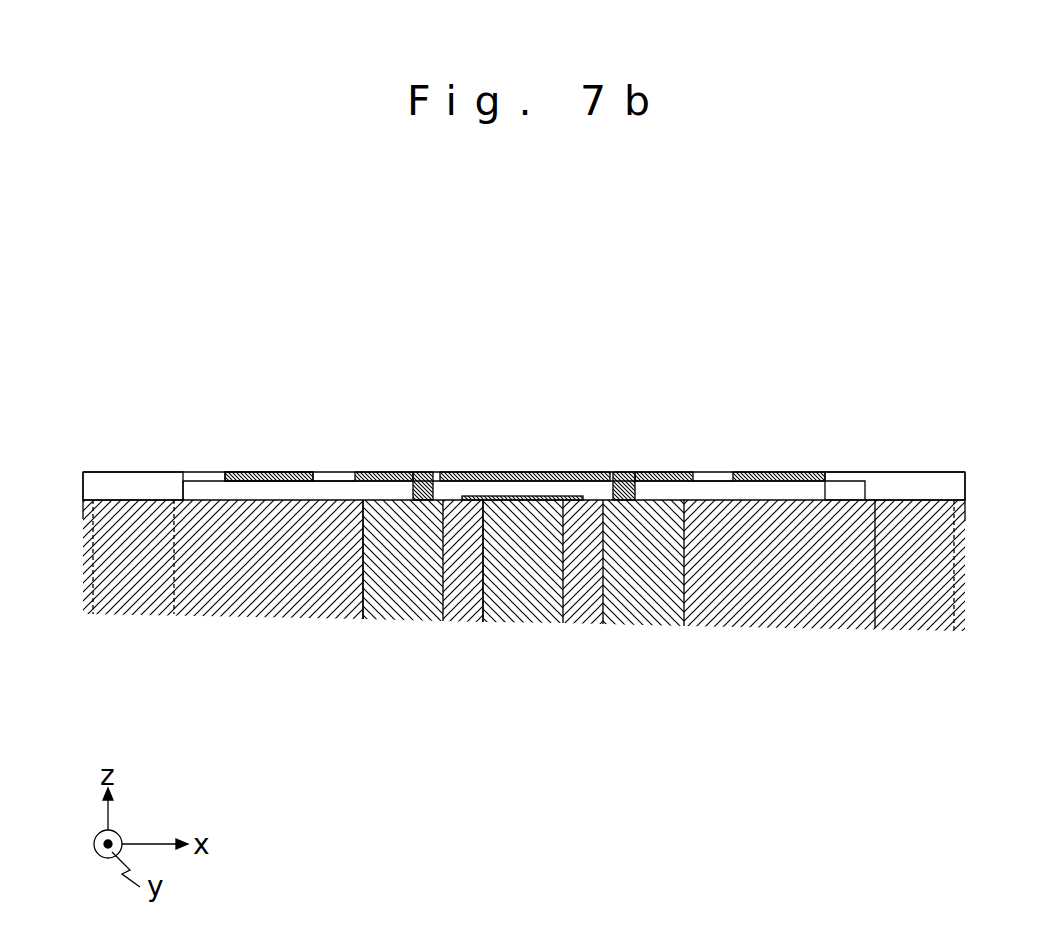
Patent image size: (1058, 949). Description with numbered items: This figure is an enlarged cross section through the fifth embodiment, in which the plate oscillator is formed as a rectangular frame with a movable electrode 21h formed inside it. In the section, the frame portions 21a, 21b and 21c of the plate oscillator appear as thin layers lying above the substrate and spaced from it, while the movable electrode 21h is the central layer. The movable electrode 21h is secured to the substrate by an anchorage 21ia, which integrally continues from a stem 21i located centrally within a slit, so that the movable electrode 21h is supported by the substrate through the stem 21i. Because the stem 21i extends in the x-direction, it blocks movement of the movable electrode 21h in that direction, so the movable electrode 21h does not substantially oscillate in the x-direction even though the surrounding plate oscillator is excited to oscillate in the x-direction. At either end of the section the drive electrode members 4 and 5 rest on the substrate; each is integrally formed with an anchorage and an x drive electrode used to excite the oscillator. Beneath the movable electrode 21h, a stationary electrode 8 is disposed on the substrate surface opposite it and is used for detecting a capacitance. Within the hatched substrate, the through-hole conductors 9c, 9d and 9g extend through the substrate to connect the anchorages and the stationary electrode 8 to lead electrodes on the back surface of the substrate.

The drive electrode member 4 is at (143, 471).
The drive electrode member 5 is at (898, 475).
The stationary electrode 8 is at (553, 498).
The through-hole conductor 9c is at (175, 572).
The through-hole conductor 9d is at (868, 578).
The through-hole conductor 9g is at (373, 565).
The portion of plate oscillator 21a is at (238, 472).
The portion of plate oscillator 21b is at (803, 473).
The portion of plate oscillator 21c is at (298, 472).
The movable electrode 21h is at (493, 472).
The stem 21i is at (402, 472).
The anchorage 21ia is at (427, 480).